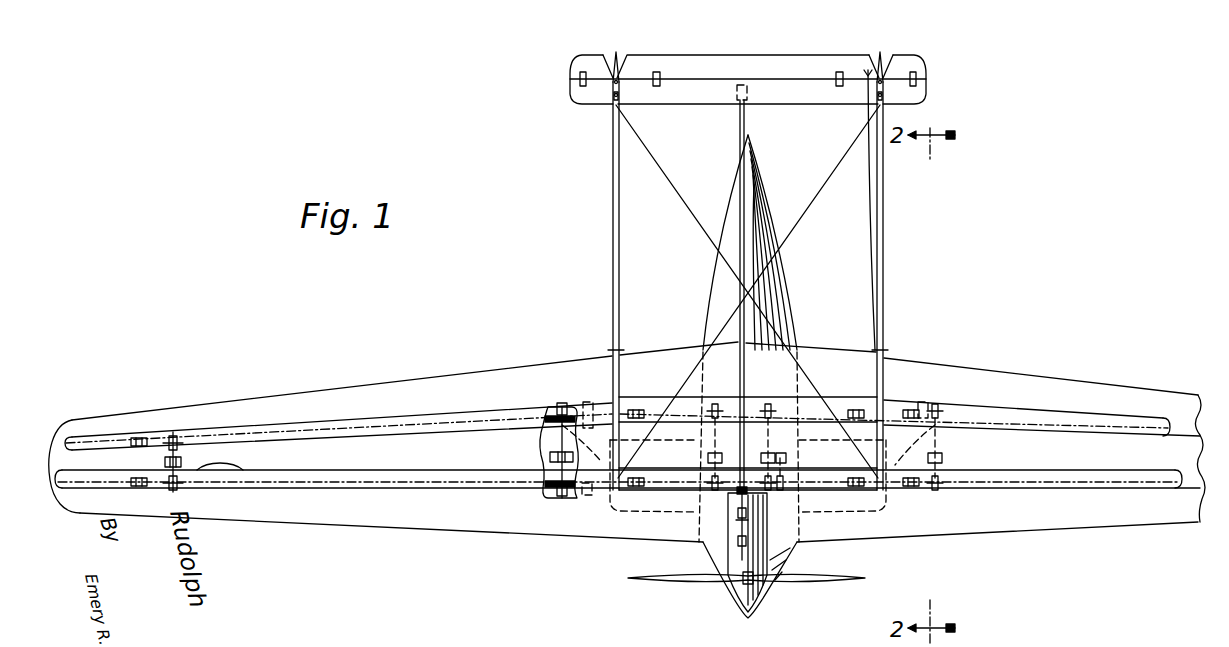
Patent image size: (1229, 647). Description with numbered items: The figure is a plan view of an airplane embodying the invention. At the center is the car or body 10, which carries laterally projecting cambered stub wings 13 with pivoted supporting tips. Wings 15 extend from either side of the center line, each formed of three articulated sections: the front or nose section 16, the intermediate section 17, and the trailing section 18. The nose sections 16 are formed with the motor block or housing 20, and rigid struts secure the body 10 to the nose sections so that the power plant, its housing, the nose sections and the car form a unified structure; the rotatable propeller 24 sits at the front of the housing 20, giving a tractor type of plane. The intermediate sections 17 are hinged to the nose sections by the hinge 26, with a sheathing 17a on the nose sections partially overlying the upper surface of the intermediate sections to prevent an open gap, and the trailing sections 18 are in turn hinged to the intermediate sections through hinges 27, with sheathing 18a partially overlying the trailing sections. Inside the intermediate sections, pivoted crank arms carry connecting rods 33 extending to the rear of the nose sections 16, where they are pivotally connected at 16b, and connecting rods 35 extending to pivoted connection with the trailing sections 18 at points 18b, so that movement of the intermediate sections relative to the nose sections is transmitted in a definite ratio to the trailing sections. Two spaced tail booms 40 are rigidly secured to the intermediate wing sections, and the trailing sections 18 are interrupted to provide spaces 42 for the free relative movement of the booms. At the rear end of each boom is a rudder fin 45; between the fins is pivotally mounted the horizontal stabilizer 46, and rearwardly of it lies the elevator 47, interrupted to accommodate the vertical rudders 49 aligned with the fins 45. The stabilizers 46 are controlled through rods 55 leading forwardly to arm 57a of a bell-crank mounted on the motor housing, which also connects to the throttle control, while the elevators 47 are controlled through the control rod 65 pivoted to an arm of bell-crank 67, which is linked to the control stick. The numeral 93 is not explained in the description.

The car or body 10 is at (787, 293).
The cambered stub wings 13 is at (655, 517).
The wings 15 is at (486, 372).
The front or nose section 16 is at (732, 505).
The pivotal connection of connecting rods to nose section 16b is at (567, 497).
The intermediate section 17 is at (736, 451).
The sheathing 17a is at (338, 477).
The trailing section 18 is at (1030, 383).
The sheathing 18a is at (340, 422).
The pivotal connection of connecting rods to trailing section 18b is at (563, 410).
The motor block or housing 20 is at (745, 590).
The propeller 24 is at (810, 583).
The hinge 26 is at (585, 500).
The hinges 27 is at (605, 394).
The connecting rods 33 is at (548, 467).
The connecting rods 35 is at (557, 439).
The tail booms 40 is at (612, 258).
The spaces 42 is at (624, 349).
The rudder fin 45 is at (612, 98).
The horizontal stabilizer 46 is at (794, 98).
The elevator 47 is at (815, 62).
The vertical rudders 49 is at (617, 55).
The rods 55 is at (738, 118).
The arm of bell-crank 57a is at (743, 522).
The control rod 65 is at (867, 240).
The bell-crank 67 is at (829, 481).
The fitting 93 is at (748, 513).